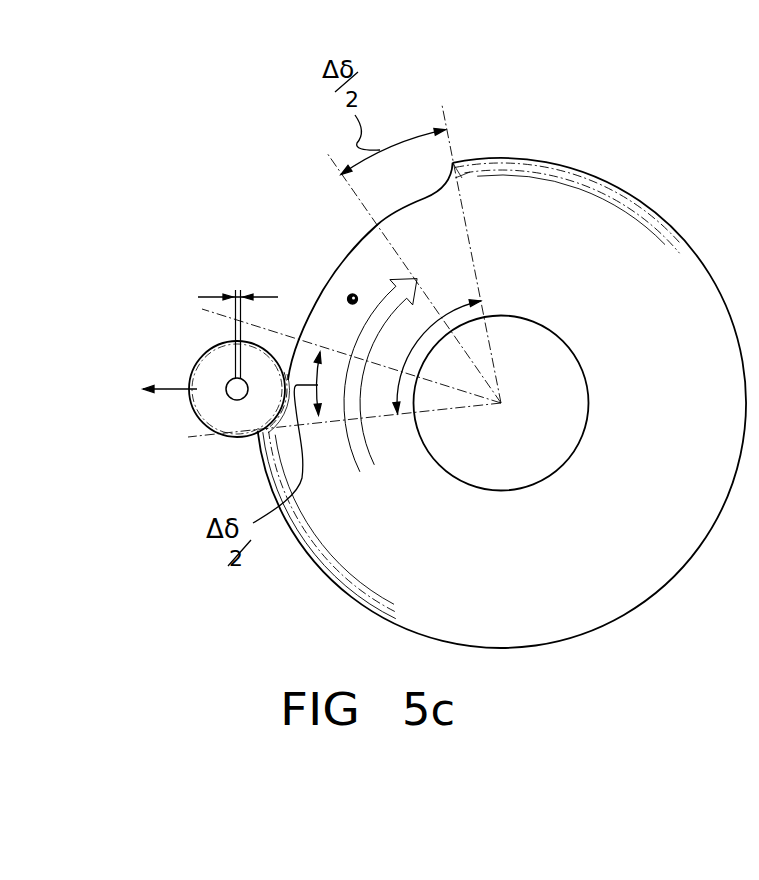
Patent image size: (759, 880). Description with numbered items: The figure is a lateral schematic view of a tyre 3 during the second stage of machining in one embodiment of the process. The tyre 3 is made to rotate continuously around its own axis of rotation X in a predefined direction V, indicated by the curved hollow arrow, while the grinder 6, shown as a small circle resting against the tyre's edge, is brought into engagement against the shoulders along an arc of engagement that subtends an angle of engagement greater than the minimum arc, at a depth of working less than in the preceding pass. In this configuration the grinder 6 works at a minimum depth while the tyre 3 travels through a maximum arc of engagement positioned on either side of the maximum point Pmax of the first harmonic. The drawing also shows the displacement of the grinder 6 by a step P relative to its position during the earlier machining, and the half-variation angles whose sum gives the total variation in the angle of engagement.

The tyre 3 is at (647, 647).
The grinder 6 is at (178, 425).
The step P is at (210, 297).
The maximum point of the first harmonic Pmax is at (347, 298).
The direction of rotation V is at (377, 320).
The axis of rotation X is at (501, 403).